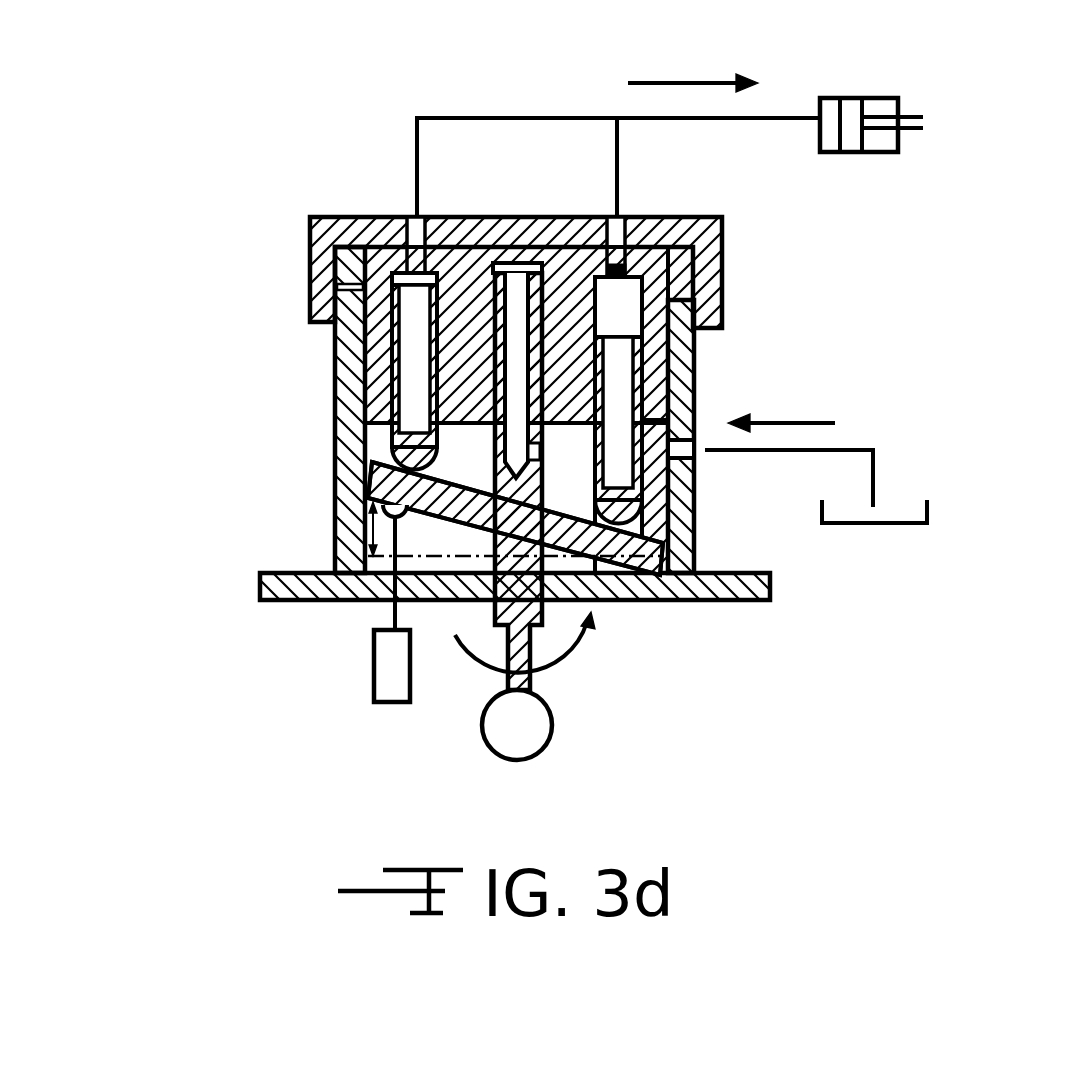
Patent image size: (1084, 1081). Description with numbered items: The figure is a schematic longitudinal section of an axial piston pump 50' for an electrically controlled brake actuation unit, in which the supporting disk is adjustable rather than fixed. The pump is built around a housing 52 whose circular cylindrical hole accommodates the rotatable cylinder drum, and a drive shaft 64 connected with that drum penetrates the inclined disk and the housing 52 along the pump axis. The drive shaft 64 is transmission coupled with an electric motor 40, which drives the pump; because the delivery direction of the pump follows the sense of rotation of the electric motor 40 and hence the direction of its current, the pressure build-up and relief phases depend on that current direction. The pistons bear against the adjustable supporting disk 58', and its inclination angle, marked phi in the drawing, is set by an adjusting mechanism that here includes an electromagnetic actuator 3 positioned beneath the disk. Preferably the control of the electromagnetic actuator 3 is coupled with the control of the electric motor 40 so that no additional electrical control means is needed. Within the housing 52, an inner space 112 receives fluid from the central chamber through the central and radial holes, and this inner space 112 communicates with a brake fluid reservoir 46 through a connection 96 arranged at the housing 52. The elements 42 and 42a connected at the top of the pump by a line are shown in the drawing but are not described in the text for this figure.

The axial piston pump 50' is at (433, 337).
The housing 52 is at (348, 443).
The adjustable supporting disk 58' is at (429, 518).
The drive shaft 64 is at (540, 610).
The electric motor 40 is at (552, 725).
The electromagnetic actuator 3 is at (374, 657).
The inner space 112 is at (560, 455).
The connection 96 is at (700, 458).
The brake fluid reservoir 46 is at (893, 507).
The cylinder actuator 42 is at (878, 100).
The actuator chamber 42a is at (830, 105).